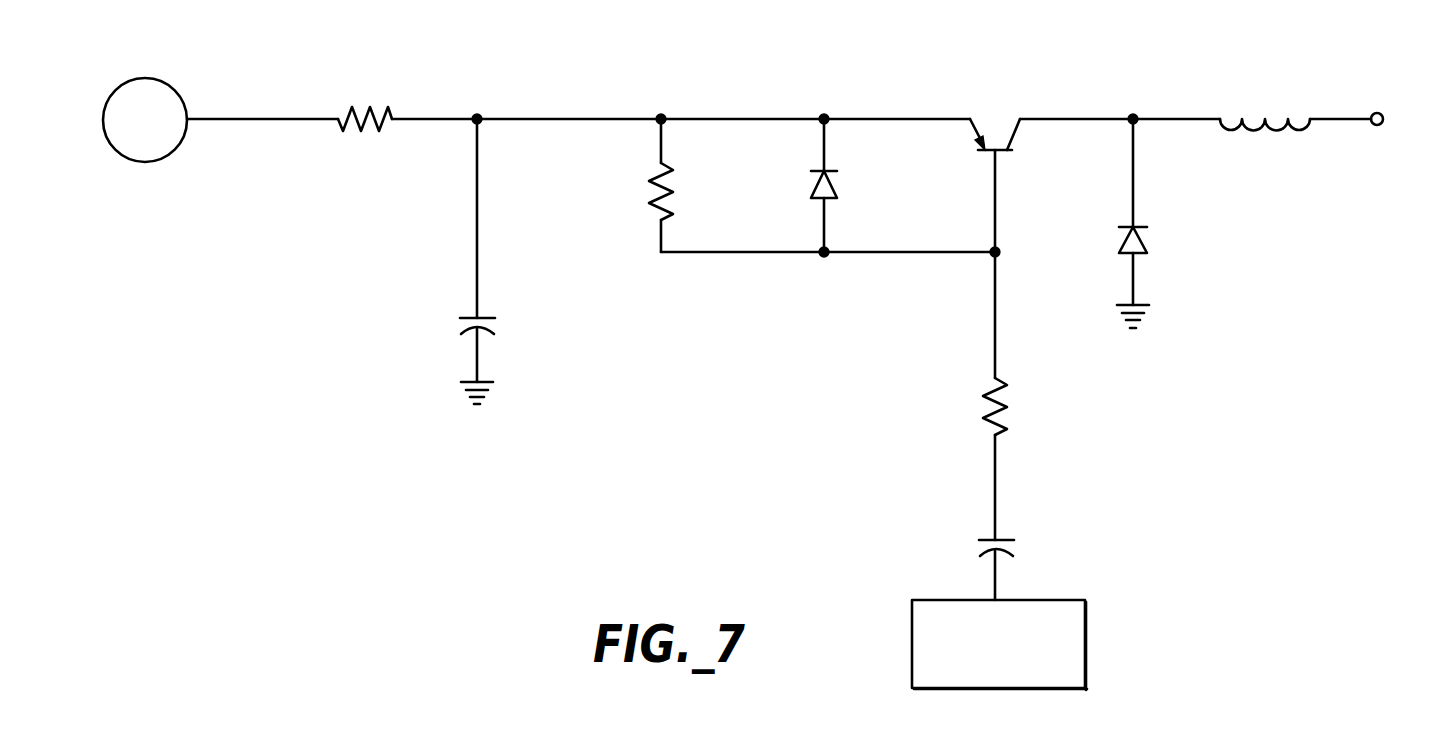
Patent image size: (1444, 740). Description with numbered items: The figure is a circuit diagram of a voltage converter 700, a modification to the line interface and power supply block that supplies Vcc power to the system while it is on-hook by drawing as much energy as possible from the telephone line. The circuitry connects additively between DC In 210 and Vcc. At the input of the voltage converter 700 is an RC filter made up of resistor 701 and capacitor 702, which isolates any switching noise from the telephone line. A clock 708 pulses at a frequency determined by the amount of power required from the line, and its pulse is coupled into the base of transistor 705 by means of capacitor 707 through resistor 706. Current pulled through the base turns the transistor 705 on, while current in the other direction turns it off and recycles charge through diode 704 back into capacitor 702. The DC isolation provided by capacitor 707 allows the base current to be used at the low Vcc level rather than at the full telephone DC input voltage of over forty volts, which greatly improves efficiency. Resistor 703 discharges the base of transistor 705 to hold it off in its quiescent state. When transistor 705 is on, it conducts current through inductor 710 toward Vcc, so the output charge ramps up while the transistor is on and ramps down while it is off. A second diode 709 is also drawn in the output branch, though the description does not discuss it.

The voltage converter 700 is at (828, 31).
The DC In 210 is at (175, 91).
The resistor 701 is at (358, 134).
The capacitor 702 is at (488, 316).
The resistor 703 is at (672, 204).
The diode 704 is at (820, 168).
The transistor 705 is at (988, 154).
The resistor 706 is at (1008, 405).
The capacitor 707 is at (1008, 538).
The clock 708 is at (1033, 600).
The 1N4003 diode 709 is at (1128, 225).
The inductor 710 is at (1267, 133).